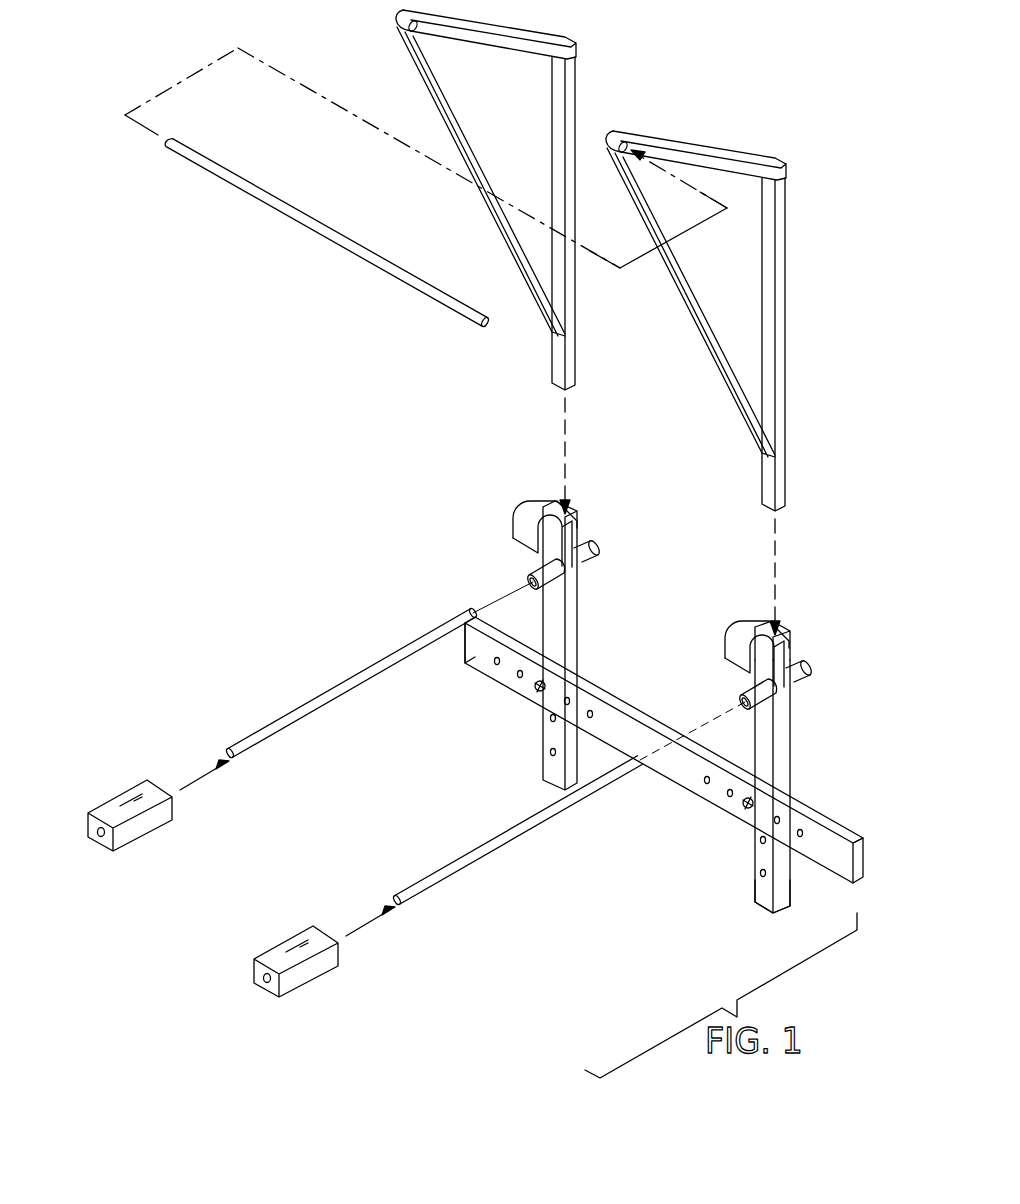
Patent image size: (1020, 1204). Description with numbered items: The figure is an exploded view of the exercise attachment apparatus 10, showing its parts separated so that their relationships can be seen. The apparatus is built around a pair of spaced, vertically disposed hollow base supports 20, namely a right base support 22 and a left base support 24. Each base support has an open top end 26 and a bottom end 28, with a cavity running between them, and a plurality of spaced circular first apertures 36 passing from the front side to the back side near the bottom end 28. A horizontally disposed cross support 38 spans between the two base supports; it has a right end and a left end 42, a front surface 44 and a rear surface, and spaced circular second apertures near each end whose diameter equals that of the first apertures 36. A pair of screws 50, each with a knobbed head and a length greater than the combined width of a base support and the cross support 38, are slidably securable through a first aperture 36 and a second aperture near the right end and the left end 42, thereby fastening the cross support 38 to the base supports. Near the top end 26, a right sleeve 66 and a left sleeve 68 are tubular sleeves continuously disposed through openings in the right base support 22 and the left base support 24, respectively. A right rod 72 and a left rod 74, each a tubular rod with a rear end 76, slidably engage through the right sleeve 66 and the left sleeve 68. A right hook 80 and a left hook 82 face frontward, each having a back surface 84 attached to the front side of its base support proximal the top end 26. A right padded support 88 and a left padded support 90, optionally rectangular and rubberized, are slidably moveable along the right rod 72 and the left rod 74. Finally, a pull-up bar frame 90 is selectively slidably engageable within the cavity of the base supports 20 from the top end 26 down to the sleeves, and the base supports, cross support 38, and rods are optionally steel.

The exercise attachment apparatus 10 is at (633, 86).
The base supports 20 is at (573, 650).
The right base support 22 is at (792, 735).
The left base support 24 is at (540, 613).
The top end 26 is at (790, 648).
The bottom end 28 is at (763, 912).
The first apertures 36 is at (549, 752).
The cross support 38 is at (800, 825).
The left end 42 is at (458, 648).
The front surface 44 is at (643, 768).
The screws 50 is at (532, 689).
The right sleeve 66 is at (792, 690).
The left sleeve 68 is at (537, 567).
The right rod 72 is at (496, 852).
The left rod 74 is at (325, 692).
The rear end 76 is at (470, 611).
The right hook 80 is at (733, 655).
The left hook 82 is at (537, 505).
The back surface 84 is at (595, 543).
The right padded support 88 is at (305, 985).
The pull-up bar frame 90 is at (803, 168).